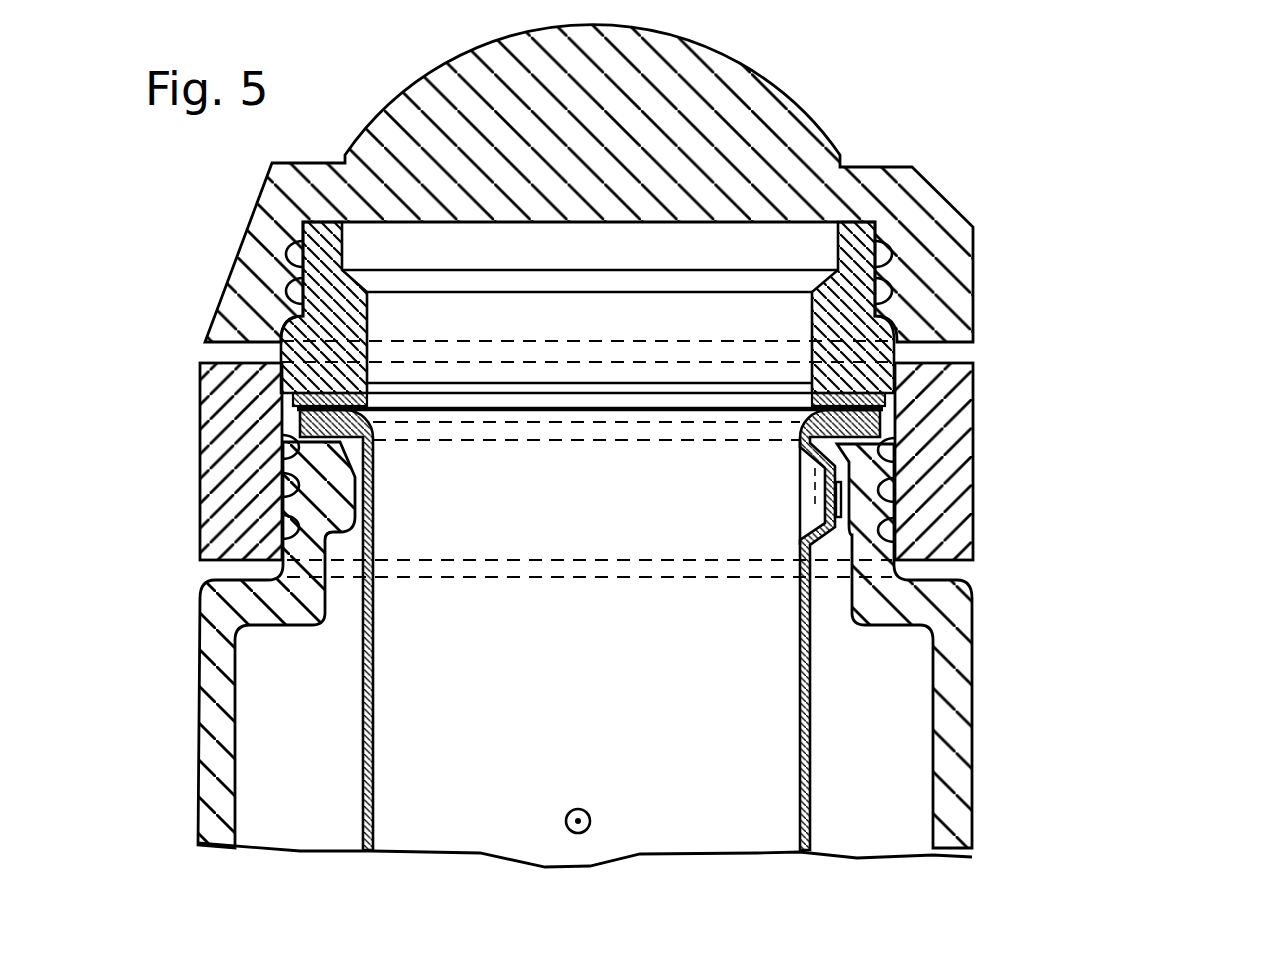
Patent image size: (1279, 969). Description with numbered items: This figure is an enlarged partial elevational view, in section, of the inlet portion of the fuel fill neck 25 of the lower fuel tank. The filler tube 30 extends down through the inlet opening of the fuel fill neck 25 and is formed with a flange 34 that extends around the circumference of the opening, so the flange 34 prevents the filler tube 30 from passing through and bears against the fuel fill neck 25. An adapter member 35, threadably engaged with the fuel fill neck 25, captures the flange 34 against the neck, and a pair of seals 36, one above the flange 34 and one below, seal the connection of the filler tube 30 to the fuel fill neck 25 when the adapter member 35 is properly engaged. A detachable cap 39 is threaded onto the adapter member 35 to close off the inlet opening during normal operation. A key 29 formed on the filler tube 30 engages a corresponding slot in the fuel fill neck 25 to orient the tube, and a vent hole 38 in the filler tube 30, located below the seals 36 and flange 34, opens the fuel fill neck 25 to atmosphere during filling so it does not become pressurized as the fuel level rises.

The fuel fill neck 25 is at (972, 833).
The key 29 is at (841, 508).
The filler tube 30 is at (812, 775).
The flange 34 is at (890, 410).
The adapter member 35 is at (883, 409).
The seals 36 is at (897, 350).
The vent hole 38 is at (590, 813).
The detachable cap 39 is at (975, 256).